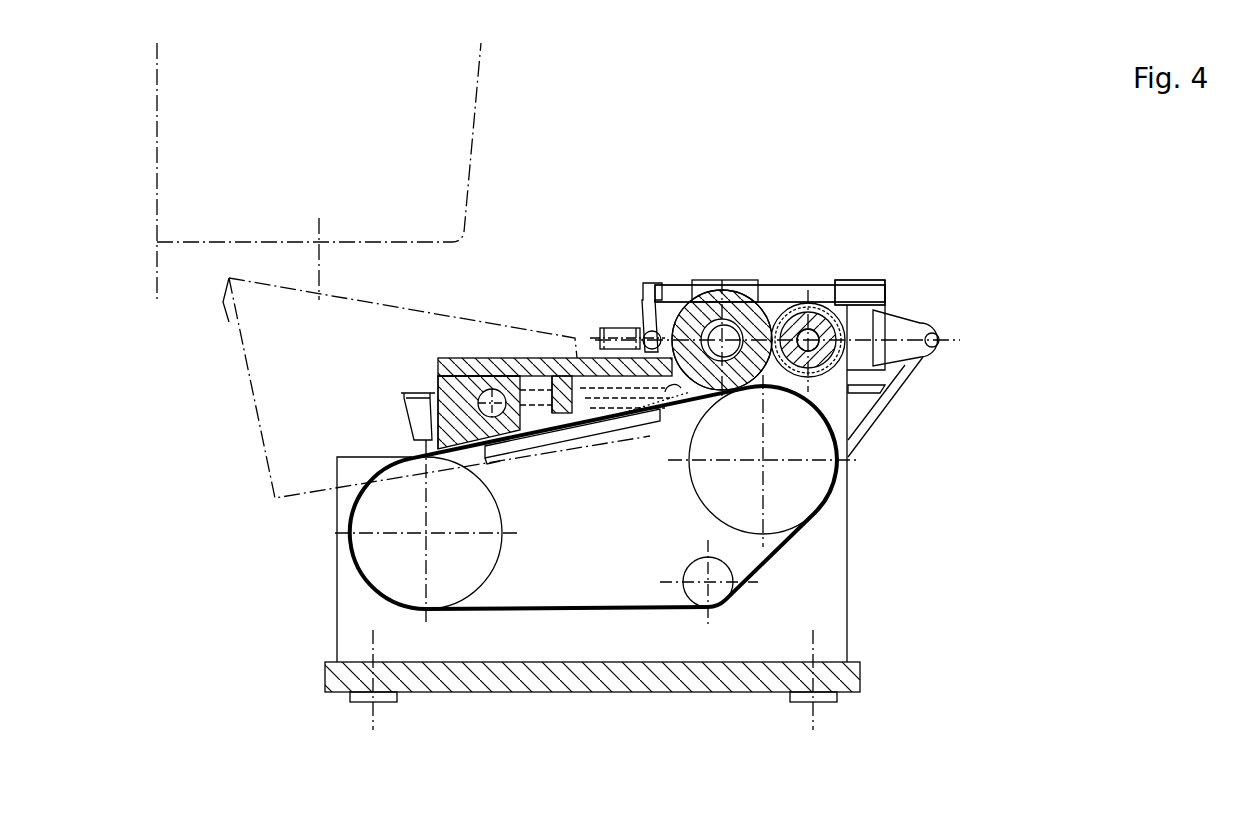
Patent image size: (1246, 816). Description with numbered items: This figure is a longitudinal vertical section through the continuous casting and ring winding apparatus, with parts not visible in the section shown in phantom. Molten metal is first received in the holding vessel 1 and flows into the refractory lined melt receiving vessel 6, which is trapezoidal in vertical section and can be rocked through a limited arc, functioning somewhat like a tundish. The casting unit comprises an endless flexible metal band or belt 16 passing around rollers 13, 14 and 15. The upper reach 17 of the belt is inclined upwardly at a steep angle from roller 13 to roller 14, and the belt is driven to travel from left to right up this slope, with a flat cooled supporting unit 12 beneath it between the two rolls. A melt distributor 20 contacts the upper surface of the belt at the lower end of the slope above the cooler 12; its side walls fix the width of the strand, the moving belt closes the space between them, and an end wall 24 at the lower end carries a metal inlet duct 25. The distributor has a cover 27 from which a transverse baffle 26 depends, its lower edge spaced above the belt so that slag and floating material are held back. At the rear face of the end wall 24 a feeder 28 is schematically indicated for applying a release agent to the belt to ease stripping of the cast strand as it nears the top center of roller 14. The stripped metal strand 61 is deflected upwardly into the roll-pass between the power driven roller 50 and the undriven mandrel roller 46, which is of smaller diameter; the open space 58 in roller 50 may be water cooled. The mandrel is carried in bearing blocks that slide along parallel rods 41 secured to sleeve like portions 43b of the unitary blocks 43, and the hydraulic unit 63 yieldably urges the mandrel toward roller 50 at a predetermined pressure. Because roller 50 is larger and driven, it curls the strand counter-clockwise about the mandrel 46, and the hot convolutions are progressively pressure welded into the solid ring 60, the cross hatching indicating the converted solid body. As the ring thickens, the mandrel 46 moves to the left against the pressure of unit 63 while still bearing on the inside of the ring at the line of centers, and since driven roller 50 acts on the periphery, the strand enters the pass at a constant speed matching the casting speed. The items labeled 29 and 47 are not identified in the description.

The holding vessel 1 is at (453, 137).
The melt receiving vessel 6 is at (257, 338).
The cooled supporting unit 12 is at (512, 440).
The roller 13 is at (378, 572).
The roller 14 is at (812, 484).
The roller 15 is at (717, 592).
The endless flexible metal band or belt 16 is at (780, 556).
The upper reach of belt 17 is at (576, 432).
The melt distributor 20 is at (493, 340).
The end wall 24 is at (437, 387).
The metal inlet duct 25 is at (500, 392).
The transverse baffle 26 is at (580, 390).
The cover 27 is at (452, 380).
The feeder 28 is at (408, 424).
The support bar 29 is at (676, 262).
The parallel rods 41 is at (792, 293).
The unitary block 43 is at (857, 313).
The sleeve like portion 43b is at (850, 287).
The mandrel roller 46 is at (707, 297).
The pivot arm 47 is at (930, 318).
The roller 50 is at (825, 307).
The open space 58 is at (820, 350).
The ring 60 is at (738, 307).
The metal strand 61 is at (693, 395).
The hydraulic unit 63 is at (637, 330).